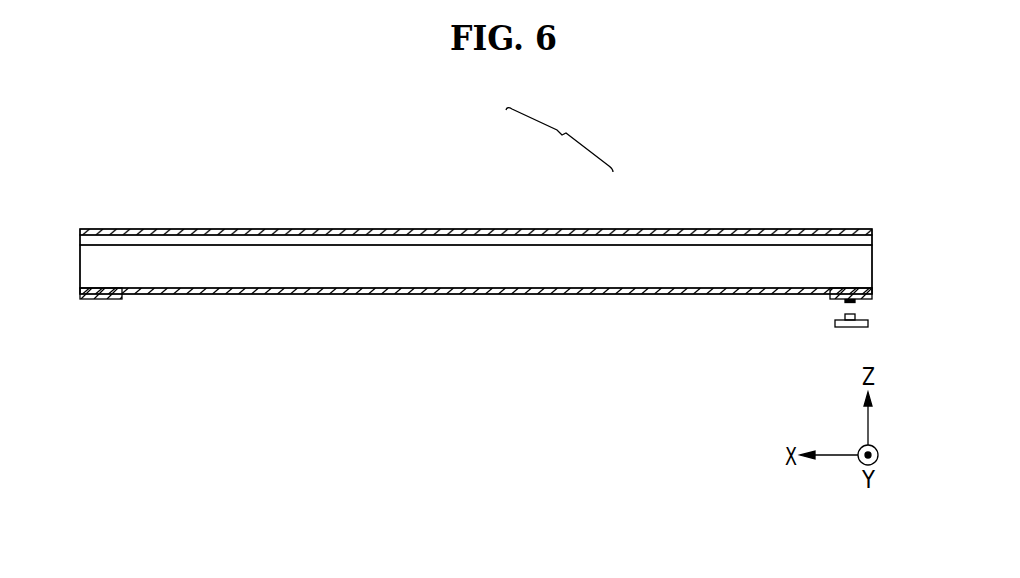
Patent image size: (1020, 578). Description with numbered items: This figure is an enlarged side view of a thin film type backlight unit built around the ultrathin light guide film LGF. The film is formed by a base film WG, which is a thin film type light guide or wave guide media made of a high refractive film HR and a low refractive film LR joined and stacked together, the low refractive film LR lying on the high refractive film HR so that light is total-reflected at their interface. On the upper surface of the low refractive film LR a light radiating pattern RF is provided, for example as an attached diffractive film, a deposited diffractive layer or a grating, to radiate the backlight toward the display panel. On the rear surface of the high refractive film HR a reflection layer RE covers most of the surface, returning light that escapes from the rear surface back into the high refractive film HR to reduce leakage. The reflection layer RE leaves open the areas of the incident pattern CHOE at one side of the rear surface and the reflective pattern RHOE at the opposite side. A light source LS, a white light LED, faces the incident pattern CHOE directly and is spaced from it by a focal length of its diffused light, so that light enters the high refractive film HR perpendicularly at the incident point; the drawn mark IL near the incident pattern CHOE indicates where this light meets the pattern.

The ultrathin light guide film LGF is at (365, 124).
The light radiating pattern RF is at (427, 233).
The low refractive film LR is at (487, 237).
The high refractive film HR is at (538, 265).
The base film WG is at (559, 136).
The reflection layer RE is at (470, 294).
The reflective pattern RHOE is at (102, 300).
The incident pattern CHOE is at (872, 287).
The incident light IL is at (857, 301).
The light source LS is at (855, 316).